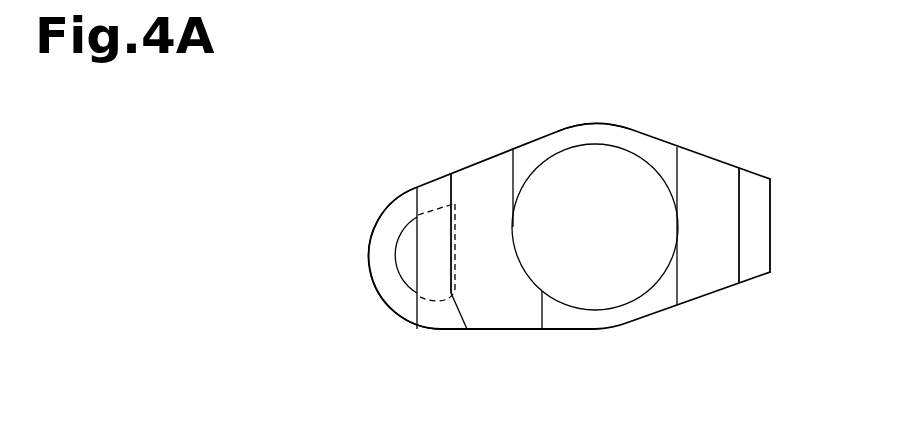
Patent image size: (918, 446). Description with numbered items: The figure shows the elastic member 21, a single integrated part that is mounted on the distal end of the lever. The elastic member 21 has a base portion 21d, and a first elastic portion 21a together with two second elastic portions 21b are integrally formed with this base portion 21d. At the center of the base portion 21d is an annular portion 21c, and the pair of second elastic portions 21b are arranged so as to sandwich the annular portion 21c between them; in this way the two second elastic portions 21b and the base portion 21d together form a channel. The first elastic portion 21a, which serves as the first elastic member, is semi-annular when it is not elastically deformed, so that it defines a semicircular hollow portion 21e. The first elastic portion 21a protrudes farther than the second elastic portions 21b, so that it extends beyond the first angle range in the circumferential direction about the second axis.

The elastic member 21 is at (708, 125).
The first elastic portion 21a is at (369, 233).
The second elastic portion 21b is at (435, 220).
The annular portion 21c is at (593, 132).
The base portion 21d is at (513, 329).
The semicircular hollow portion 21e is at (405, 235).